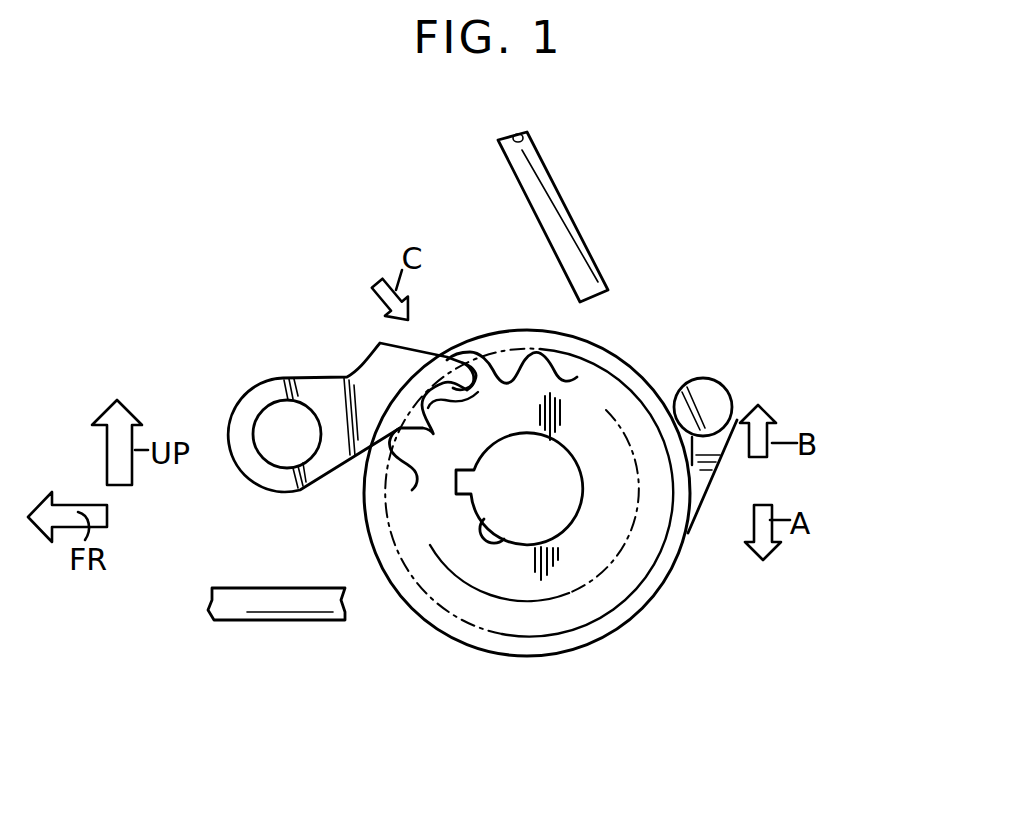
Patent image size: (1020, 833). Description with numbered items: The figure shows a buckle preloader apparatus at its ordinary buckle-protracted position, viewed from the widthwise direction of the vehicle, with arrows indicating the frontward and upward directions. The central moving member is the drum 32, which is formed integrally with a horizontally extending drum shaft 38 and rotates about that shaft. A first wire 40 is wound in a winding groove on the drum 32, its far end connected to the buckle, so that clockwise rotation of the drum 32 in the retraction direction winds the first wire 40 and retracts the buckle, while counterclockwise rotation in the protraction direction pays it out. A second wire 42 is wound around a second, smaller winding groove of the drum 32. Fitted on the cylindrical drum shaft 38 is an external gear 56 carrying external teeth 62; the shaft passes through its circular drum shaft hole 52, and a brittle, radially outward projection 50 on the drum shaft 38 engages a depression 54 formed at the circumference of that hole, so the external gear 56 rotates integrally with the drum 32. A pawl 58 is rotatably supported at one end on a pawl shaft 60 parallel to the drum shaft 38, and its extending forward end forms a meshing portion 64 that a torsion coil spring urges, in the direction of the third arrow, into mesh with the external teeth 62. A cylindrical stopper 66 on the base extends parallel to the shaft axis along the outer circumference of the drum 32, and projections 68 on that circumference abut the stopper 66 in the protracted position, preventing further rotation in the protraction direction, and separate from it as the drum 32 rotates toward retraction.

The drum 32 is at (638, 367).
The drum shaft 38 is at (525, 503).
The first wire 40 is at (558, 227).
The second wire 42 is at (287, 598).
The projection 50 is at (455, 478).
The drum shaft hole 52 is at (485, 523).
The depression 54 is at (499, 468).
The external gear 56 is at (406, 478).
The pawl 58 is at (333, 378).
The pawl shaft 60 is at (290, 430).
The external teeth 62 is at (447, 360).
The meshing portion 64 is at (487, 378).
The stopper 66 is at (708, 400).
The projections 68 is at (708, 473).